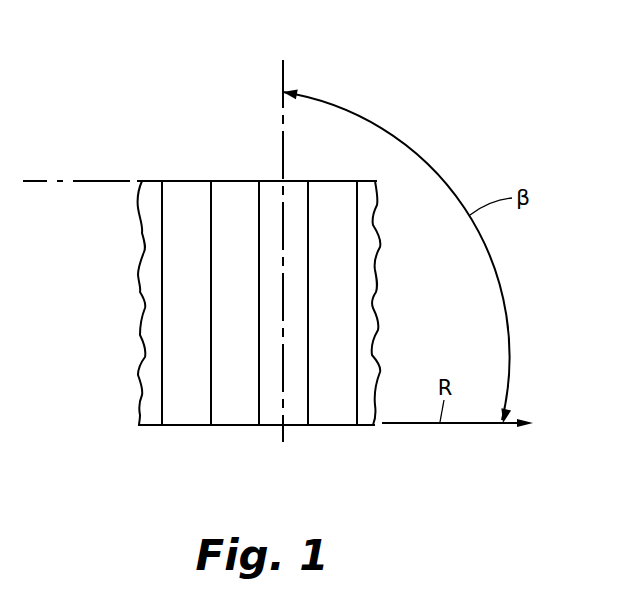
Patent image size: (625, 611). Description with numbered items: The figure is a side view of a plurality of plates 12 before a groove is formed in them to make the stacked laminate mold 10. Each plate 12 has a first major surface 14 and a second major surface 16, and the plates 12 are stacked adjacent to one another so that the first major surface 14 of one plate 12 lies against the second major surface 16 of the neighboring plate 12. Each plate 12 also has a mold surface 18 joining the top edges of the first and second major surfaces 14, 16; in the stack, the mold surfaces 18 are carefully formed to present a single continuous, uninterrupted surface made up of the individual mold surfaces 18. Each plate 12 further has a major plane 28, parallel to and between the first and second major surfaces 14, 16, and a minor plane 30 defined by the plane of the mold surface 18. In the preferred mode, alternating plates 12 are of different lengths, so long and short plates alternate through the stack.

The stacked laminate mold 10 is at (508, 63).
The plates 12 is at (227, 438).
The first major surface 14 is at (258, 197).
The second major surface 16 is at (310, 196).
The mold surface 18 is at (291, 182).
The major plane 28 is at (282, 88).
The minor plane 30 is at (89, 180).